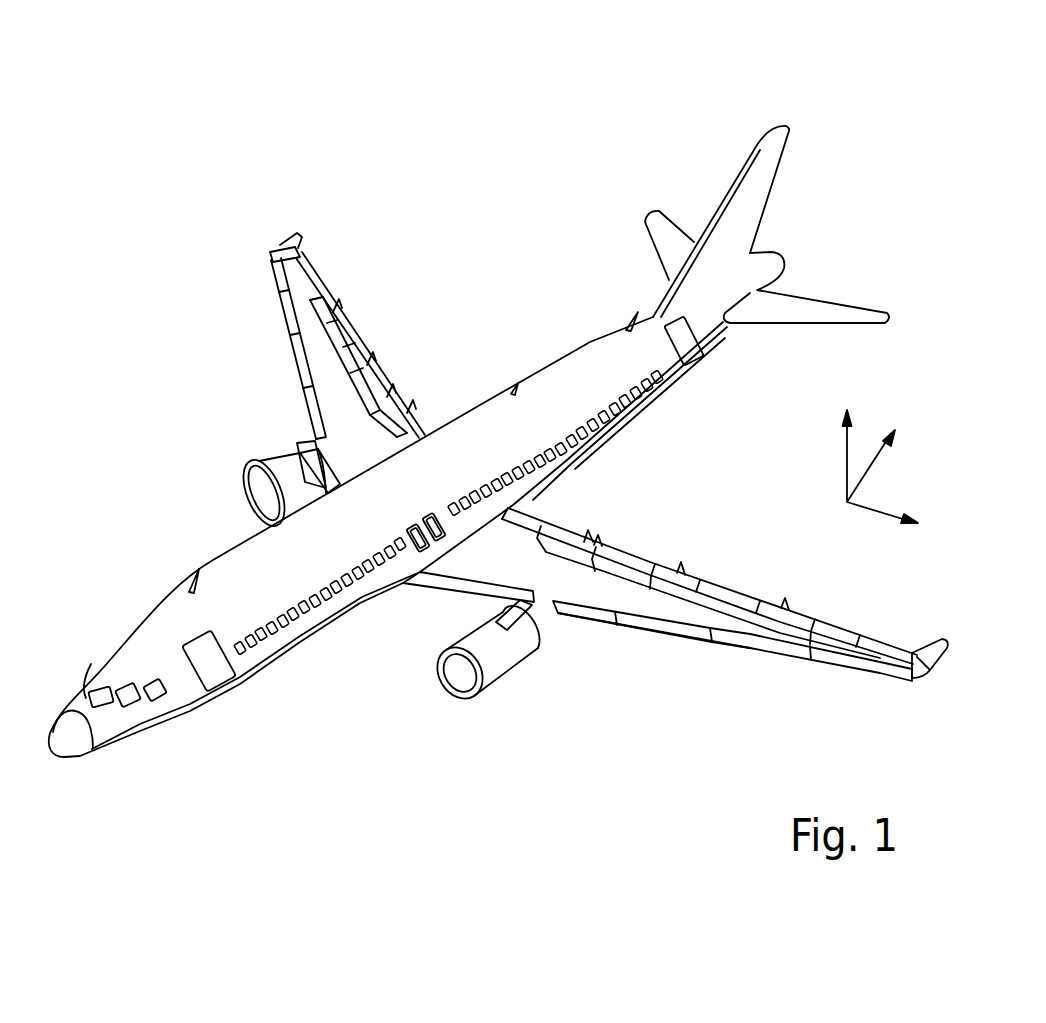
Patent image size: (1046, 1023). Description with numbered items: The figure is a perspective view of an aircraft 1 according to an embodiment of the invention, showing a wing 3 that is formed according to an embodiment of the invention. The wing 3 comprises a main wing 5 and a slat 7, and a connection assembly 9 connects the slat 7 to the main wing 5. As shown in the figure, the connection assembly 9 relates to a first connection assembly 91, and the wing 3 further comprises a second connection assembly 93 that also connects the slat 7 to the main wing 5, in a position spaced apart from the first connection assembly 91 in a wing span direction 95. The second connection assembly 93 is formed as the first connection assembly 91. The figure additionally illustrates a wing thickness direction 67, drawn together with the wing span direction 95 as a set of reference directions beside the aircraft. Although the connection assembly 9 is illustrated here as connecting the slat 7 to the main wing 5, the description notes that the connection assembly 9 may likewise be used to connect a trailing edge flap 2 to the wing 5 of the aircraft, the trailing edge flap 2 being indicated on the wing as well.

The aircraft 1 is at (498, 391).
The trailing edge flap 2 is at (373, 380).
The wing 3 is at (609, 480).
The main wing 5 is at (620, 600).
The slat 7 is at (665, 630).
The connection assembly 9 is at (732, 686).
The first connection assembly 91 is at (615, 625).
The second connection assembly 93 is at (713, 647).
The wing thickness direction 67 is at (848, 448).
The wing span direction 95 is at (875, 513).